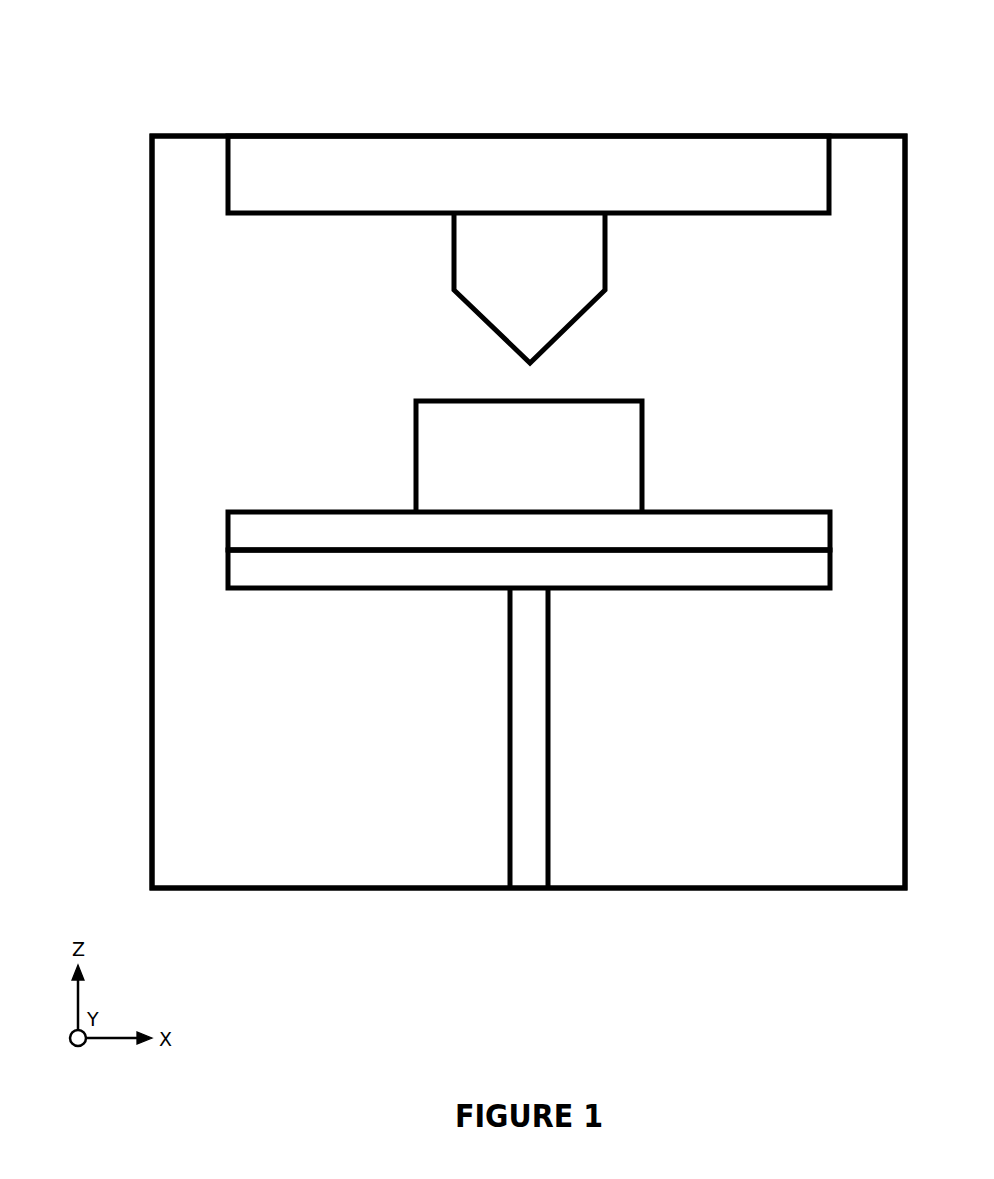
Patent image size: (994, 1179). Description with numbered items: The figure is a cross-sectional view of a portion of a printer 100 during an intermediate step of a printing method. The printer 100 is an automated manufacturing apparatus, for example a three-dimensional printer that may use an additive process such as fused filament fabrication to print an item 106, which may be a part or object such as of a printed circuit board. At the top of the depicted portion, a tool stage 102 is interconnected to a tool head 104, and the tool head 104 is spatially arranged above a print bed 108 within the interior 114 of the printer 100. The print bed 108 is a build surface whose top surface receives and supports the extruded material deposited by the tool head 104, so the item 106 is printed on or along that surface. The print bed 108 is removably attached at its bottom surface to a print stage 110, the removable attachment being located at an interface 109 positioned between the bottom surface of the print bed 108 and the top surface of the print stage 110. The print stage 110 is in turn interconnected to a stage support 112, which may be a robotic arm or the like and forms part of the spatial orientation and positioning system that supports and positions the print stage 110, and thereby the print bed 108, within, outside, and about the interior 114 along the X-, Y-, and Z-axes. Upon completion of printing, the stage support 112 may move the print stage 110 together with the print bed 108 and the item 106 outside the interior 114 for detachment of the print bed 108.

The printer 100 is at (121, 97).
The tool stage 102 is at (803, 178).
The tool head 104 is at (583, 253).
The item 106 is at (620, 459).
The print bed 108 is at (803, 533).
The interface 109 is at (345, 548).
The print stage 110 is at (803, 571).
The stage support 112 is at (528, 741).
The interior 114 is at (880, 876).